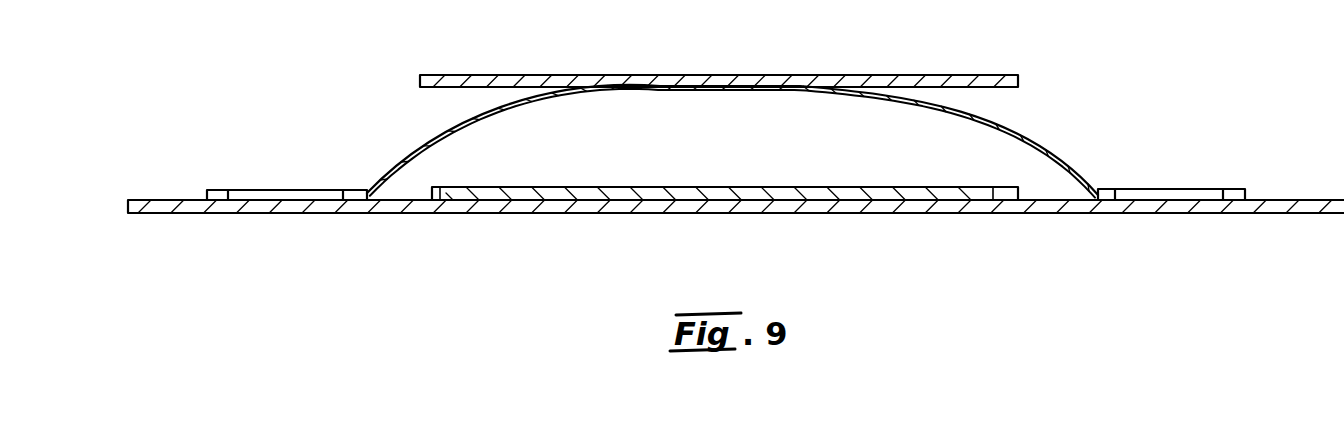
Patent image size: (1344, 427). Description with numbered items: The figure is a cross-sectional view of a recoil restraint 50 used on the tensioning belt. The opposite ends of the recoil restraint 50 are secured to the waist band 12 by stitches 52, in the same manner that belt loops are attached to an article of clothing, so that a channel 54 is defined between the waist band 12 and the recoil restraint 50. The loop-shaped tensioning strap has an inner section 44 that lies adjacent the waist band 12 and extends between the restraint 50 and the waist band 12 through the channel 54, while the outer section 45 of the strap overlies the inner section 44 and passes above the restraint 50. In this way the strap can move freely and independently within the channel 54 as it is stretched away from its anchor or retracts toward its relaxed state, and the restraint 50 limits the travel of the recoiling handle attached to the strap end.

The waist band 12 is at (393, 213).
The inner section 44 is at (628, 187).
The outer section 45 is at (980, 75).
The recoil restraint 50 is at (415, 152).
The stitches 52 is at (343, 192).
The channel 54 is at (770, 154).